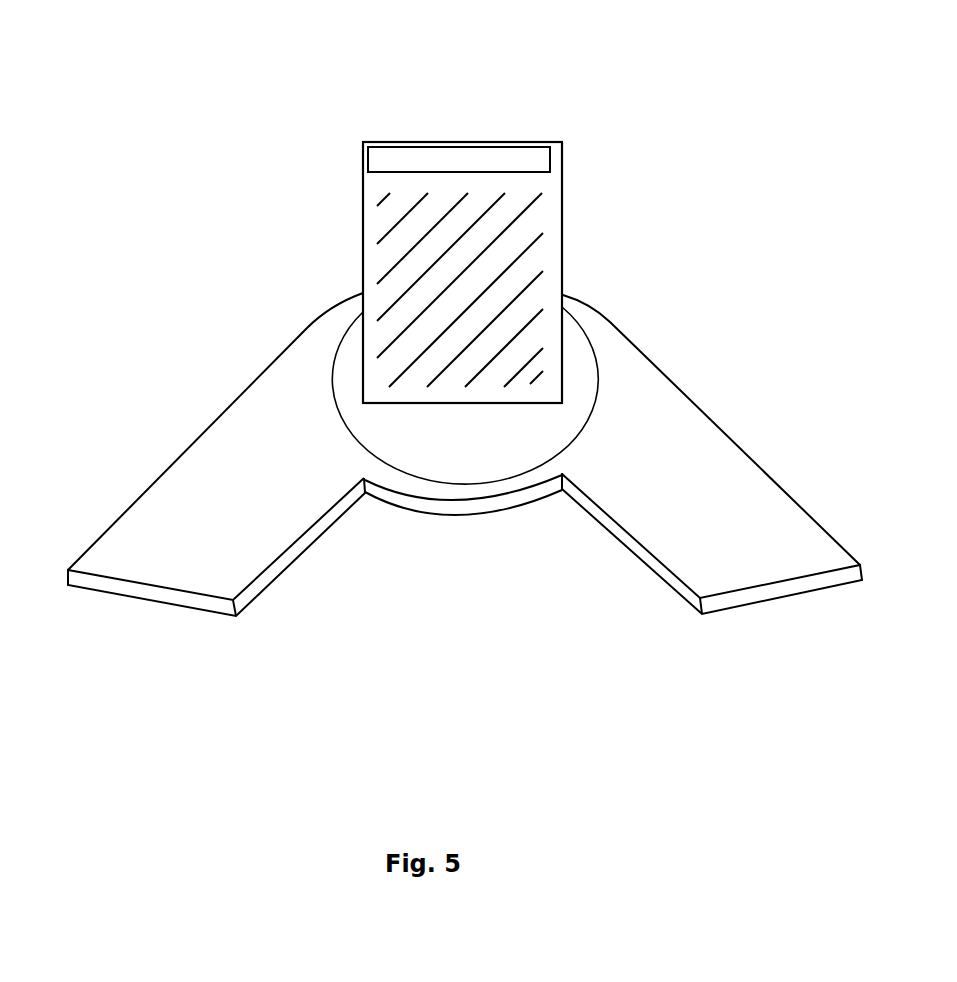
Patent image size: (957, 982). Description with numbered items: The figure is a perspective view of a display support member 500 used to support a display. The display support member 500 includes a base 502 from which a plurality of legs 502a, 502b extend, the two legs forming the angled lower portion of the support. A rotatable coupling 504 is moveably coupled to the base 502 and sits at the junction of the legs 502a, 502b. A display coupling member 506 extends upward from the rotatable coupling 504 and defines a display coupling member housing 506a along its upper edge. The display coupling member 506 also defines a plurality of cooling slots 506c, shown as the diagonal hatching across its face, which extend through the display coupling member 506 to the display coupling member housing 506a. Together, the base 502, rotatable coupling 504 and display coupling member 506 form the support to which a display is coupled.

The display support member 500 is at (201, 157).
The base 502 is at (607, 318).
The leg 502a is at (202, 542).
The leg 502b is at (733, 538).
The rotatable coupling 504 is at (455, 452).
The display coupling member 506 is at (557, 217).
The display coupling member housing 506a is at (456, 139).
The cooling slots 506c is at (427, 233).